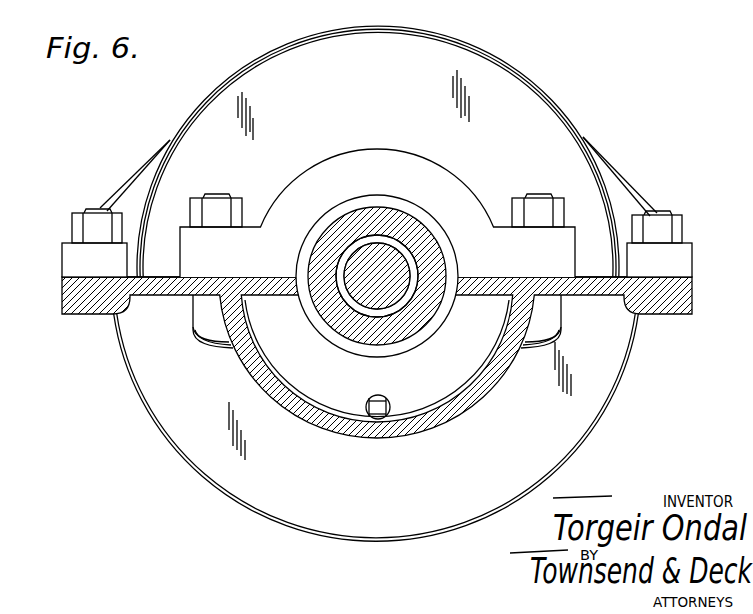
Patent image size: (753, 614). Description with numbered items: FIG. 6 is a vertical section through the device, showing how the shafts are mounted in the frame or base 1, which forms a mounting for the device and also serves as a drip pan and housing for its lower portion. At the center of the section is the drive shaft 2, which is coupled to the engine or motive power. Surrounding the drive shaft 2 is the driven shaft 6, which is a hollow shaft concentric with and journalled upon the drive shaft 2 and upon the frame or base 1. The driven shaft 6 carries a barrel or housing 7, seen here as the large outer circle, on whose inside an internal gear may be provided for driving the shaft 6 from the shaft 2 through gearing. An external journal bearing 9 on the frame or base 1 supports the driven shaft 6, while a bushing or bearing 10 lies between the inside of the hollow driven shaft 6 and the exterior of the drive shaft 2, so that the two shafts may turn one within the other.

The frame or base 1 is at (558, 465).
The drive shaft 2 is at (395, 300).
The driven shaft 6 is at (437, 259).
The barrel or housing 7 is at (523, 83).
The external journal bearing 9 is at (432, 228).
The bushing or bearing 10 is at (413, 295).